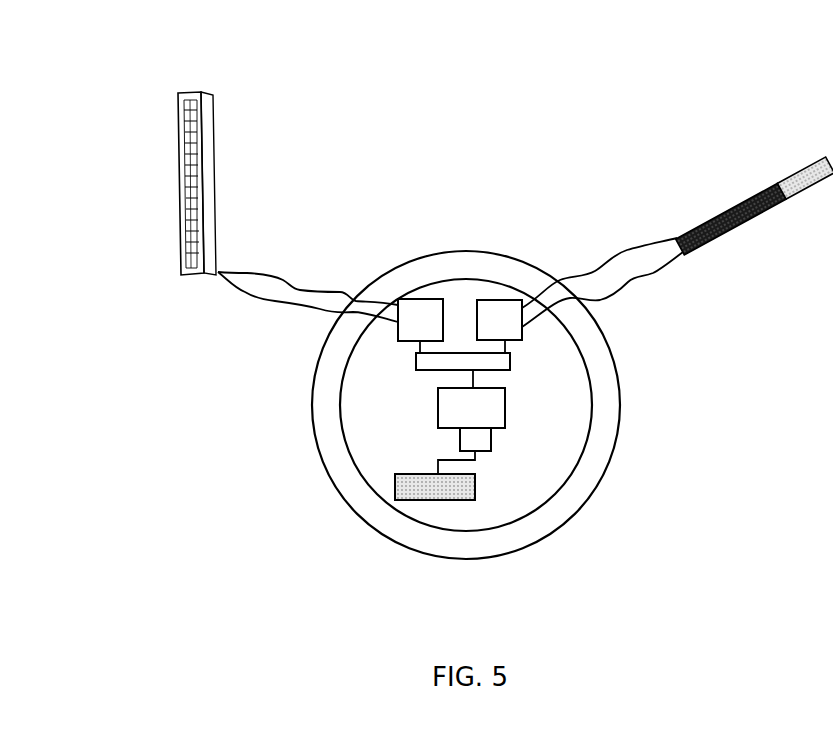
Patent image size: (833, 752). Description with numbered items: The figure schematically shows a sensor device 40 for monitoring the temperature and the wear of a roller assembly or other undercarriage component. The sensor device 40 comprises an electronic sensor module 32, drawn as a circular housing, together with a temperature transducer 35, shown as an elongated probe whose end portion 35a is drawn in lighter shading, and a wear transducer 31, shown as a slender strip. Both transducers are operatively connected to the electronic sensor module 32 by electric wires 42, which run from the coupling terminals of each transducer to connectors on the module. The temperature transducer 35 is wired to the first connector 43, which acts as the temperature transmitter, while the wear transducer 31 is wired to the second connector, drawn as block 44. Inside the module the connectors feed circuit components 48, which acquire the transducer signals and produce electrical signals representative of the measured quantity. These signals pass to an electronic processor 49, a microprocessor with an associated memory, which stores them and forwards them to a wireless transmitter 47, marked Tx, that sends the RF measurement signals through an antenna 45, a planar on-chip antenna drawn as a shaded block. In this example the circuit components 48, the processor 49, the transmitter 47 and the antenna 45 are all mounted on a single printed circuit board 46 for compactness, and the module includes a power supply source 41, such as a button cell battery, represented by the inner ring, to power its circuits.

The wear transducer 31 is at (176, 120).
The electronic sensor module 32 is at (625, 435).
The temperature transducer 35 is at (739, 203).
The stylus tip 35a is at (794, 170).
The sensor device 40 is at (443, 160).
The power supply source 41 is at (533, 527).
The electric wires 42 is at (255, 273).
The first connector 43 is at (495, 300).
The electronic module 44 is at (420, 299).
The antenna 45 is at (423, 502).
The printed circuit board 46 is at (352, 465).
The wireless transmitter 47 is at (460, 441).
The circuit components 48 is at (416, 361).
The electronic processor 49 is at (438, 410).